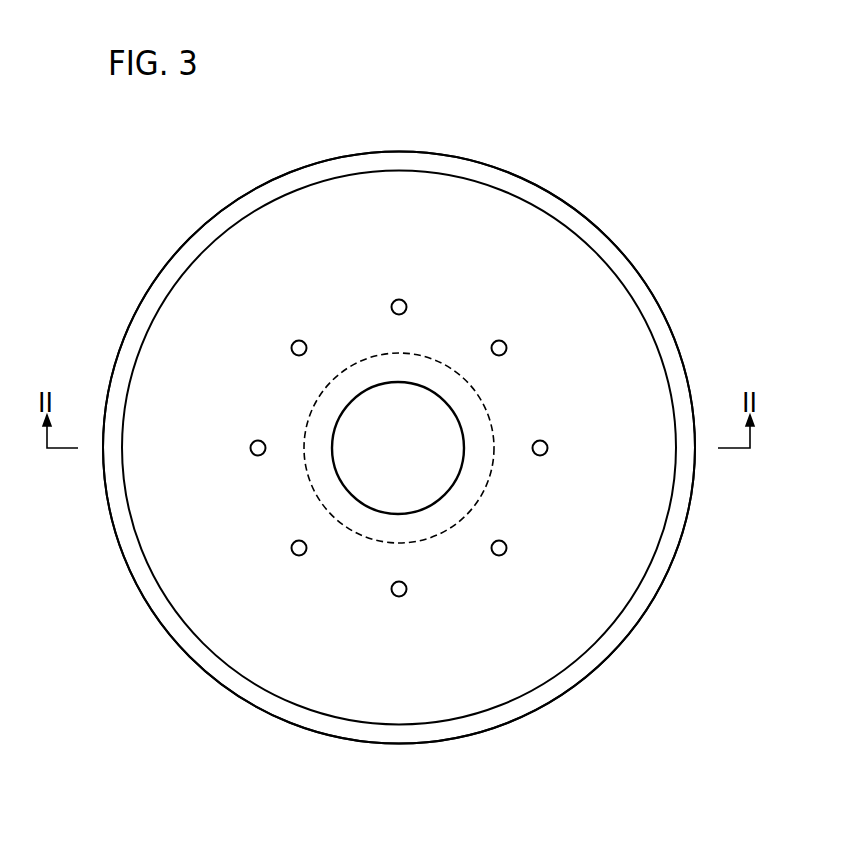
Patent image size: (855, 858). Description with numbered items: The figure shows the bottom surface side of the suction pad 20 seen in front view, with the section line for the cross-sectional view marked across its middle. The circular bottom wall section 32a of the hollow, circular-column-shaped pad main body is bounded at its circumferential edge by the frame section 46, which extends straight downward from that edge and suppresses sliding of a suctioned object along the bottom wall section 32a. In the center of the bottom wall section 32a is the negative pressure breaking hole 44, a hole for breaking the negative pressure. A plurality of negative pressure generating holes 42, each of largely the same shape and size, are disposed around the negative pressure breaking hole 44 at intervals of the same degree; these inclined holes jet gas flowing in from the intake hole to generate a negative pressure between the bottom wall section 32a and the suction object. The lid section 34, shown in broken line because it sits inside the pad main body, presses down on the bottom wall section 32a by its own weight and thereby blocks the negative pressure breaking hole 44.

The suction pad 20 is at (171, 131).
The bottom wall section 32a is at (522, 665).
The lid section 34 is at (483, 408).
The negative pressure generating hole 42 is at (398, 298).
The negative pressure breaking hole 44 is at (400, 408).
The frame section 46 is at (615, 638).